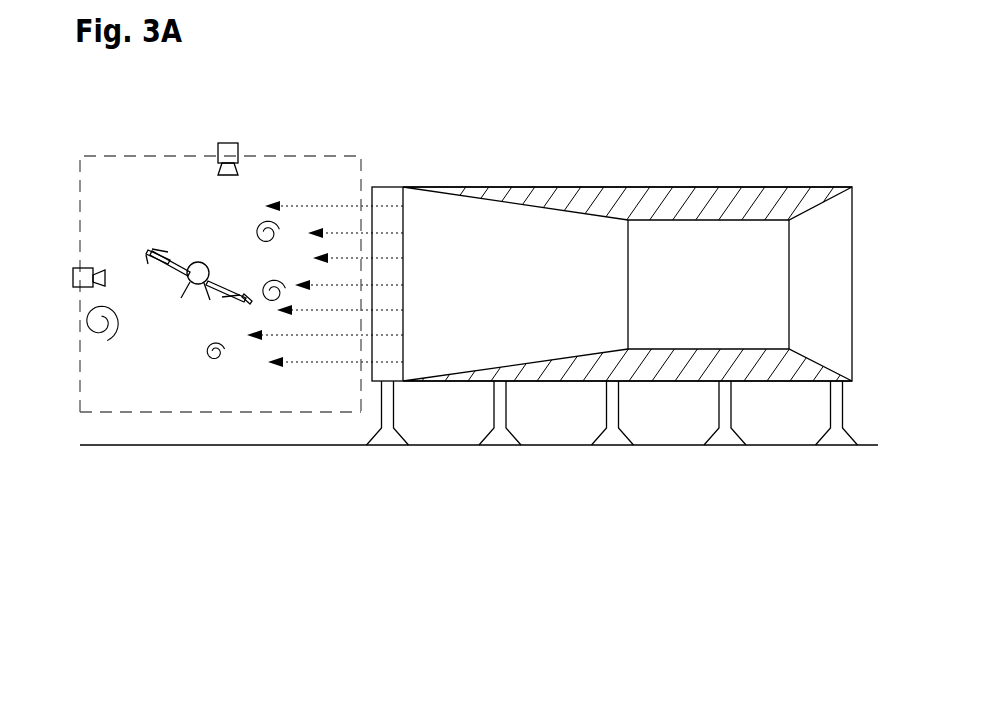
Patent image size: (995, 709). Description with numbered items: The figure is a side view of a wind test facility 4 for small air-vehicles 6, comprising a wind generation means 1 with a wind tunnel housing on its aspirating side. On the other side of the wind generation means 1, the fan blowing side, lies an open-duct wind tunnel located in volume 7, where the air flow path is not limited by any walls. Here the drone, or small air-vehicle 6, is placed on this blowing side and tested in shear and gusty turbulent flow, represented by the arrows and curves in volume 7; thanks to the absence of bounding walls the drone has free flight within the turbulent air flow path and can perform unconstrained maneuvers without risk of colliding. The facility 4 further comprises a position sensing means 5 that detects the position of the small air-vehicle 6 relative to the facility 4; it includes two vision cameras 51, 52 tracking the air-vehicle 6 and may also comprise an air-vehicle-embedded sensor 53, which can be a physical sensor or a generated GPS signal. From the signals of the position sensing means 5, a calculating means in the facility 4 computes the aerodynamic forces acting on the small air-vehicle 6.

The wind generation means 1 is at (329, 360).
The wind test facility 4 is at (625, 297).
The position sensing means 5 is at (187, 284).
The vision camera 51 is at (289, 128).
The vision camera 52 is at (53, 298).
The air-vehicle-embedded sensor 53 is at (108, 326).
The small air-vehicle 6 is at (139, 261).
The volume 7 is at (220, 448).